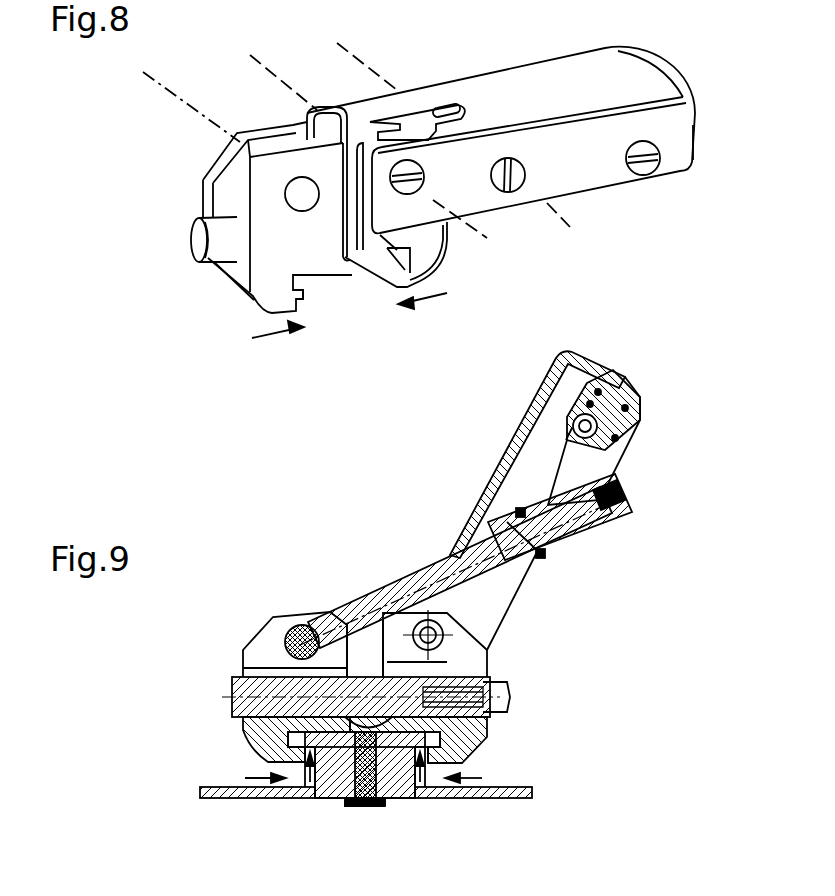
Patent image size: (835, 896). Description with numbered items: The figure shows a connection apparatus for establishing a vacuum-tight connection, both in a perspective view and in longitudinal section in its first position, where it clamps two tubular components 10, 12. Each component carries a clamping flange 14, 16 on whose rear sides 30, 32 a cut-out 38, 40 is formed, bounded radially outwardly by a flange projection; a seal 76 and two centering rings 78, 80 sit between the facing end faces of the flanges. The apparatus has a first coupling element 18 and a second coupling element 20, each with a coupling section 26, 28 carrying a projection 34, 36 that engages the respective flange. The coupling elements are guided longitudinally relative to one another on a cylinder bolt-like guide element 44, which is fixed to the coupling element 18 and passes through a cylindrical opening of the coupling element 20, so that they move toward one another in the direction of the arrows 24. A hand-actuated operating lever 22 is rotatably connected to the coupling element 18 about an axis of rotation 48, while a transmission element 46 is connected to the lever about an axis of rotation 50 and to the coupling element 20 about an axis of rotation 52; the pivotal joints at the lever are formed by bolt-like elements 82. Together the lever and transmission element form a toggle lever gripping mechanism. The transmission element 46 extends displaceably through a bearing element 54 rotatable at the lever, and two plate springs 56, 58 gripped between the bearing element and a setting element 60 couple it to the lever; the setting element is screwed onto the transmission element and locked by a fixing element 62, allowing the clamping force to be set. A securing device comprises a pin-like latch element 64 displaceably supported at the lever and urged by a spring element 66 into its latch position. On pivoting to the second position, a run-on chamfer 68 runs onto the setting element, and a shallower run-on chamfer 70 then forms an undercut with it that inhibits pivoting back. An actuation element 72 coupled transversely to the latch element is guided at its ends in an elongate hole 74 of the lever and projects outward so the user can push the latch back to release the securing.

In FIG. 9, the component 10 is at (528, 788).
In FIG. 9, the component 12 is at (210, 787).
In FIG. 9, the clamping flange 14 is at (396, 765).
In FIG. 9, the clamping flange 16 is at (339, 799).
In FIG. 8, the first coupling element 18 is at (440, 230).
In FIG. 9, the first coupling element 18 is at (470, 662).
In FIG. 8, the second coupling element 20 is at (222, 166).
In FIG. 9, the second coupling element 20 is at (257, 650).
In FIG. 8, the operating lever 22 is at (556, 76).
In FIG. 9, the operating lever 22 is at (586, 356).
In FIG. 8, the arrows 24 is at (262, 340).
In FIG. 9, the arrows 24 is at (252, 780).
In FIG. 8, the coupling section 26 is at (422, 257).
In FIG. 9, the coupling section 26 is at (472, 735).
In FIG. 8, the coupling section 28 is at (272, 285).
In FIG. 9, the coupling section 28 is at (250, 728).
In FIG. 9, the rear side 30 is at (425, 793).
In FIG. 9, the rear side 32 is at (316, 790).
In FIG. 8, the projection 34 is at (395, 283).
In FIG. 9, the projection 34 is at (462, 755).
In FIG. 8, the projection 36 is at (303, 302).
In FIG. 9, the projection 36 is at (300, 755).
In FIG. 9, the cut-out 38 is at (437, 793).
In FIG. 9, the cut-out 40 is at (300, 780).
In FIG. 8, the guide element 44 is at (203, 244).
In FIG. 9, the guide element 44 is at (230, 688).
In FIG. 8, the transmission element 46 is at (340, 155).
In FIG. 9, the transmission element 46 is at (349, 615).
In FIG. 8, the axis of rotation 48 is at (298, 83).
In FIG. 9, the axis of rotation 48 is at (409, 598).
In FIG. 8, the axis of rotation 50 is at (349, 52).
In FIG. 9, the axis of rotation 50 is at (503, 548).
In FIG. 8, the axis of rotation 52 is at (229, 128).
In FIG. 9, the axis of rotation 52 is at (295, 626).
In FIG. 8, the bearing element 54 is at (442, 112).
In FIG. 9, the bearing element 54 is at (540, 562).
In FIG. 9, the spring element 56 is at (545, 560).
In FIG. 9, the spring element 58 is at (548, 555).
In FIG. 9, the setting element 60 is at (587, 531).
In FIG. 9, the fixing element 62 is at (624, 517).
In FIG. 9, the latch element 64 is at (612, 416).
In FIG. 9, the spring element 66 is at (628, 395).
In FIG. 9, the run-on chamfer 68 is at (575, 447).
In FIG. 9, the run-on chamfer 70 is at (578, 424).
In FIG. 8, the actuation element 72 is at (648, 172).
In FIG. 9, the actuation element 72 is at (594, 434).
In FIG. 8, the elongate hole 74 is at (694, 142).
In FIG. 9, the seal 76 is at (377, 790).
In FIG. 9, the centering ring 78 is at (352, 806).
In FIG. 9, the centering ring 80 is at (380, 806).
In FIG. 8, the bolt-like elements 82 is at (424, 178).
In FIG. 9, the bolt-like elements 82 is at (430, 620).